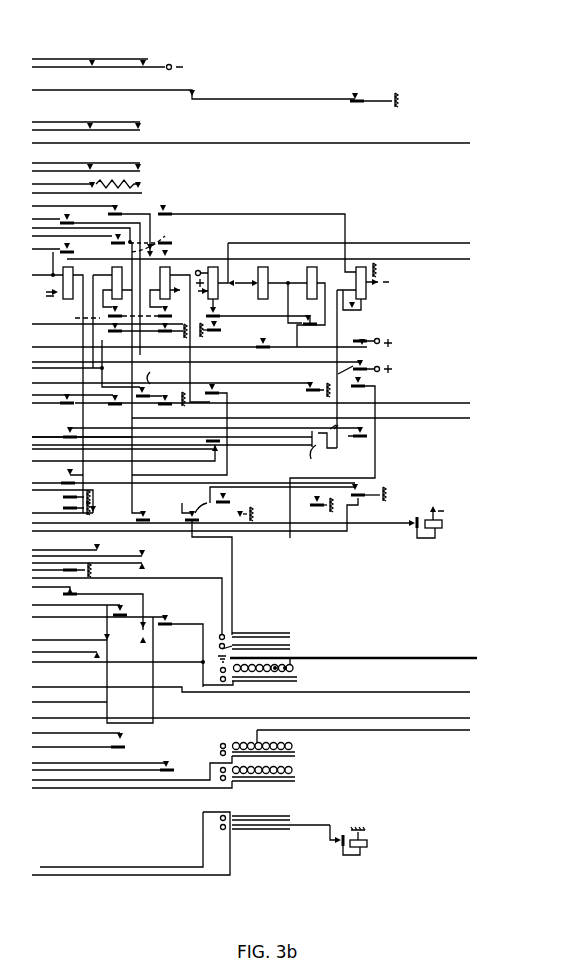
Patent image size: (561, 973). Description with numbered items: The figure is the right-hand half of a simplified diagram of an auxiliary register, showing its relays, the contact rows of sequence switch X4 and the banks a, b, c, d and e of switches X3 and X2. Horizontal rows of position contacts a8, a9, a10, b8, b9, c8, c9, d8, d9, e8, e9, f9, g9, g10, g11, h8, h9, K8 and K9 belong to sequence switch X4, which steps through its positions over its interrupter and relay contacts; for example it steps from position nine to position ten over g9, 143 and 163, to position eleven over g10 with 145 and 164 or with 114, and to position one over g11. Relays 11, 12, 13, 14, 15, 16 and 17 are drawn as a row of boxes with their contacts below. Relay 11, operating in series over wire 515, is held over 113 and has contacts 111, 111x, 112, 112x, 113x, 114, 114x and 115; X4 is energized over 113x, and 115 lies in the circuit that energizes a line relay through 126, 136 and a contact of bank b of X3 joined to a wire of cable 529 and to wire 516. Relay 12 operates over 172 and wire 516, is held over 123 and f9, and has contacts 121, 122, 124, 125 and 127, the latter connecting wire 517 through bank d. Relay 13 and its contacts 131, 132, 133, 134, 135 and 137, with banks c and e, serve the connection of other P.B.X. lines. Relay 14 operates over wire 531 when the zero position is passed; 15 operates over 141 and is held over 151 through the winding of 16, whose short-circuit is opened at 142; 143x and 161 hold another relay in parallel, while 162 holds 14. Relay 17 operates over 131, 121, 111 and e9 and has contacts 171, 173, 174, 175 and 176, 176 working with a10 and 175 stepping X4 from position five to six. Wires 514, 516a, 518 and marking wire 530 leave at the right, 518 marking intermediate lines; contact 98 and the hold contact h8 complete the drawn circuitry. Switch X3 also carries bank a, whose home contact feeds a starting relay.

The contact a8 of sequence switch X4 a8 is at (90, 55).
The contact a9 of sequence switch X4 a9 is at (107, 57).
The contact a10 of sequence switch X4 a10 is at (193, 87).
The contact b8 of sequence switch X4 b8 is at (86, 115).
The contact b9 of sequence switch X4 b9 is at (86, 115).
The contact c8 of sequence switch X4 c8 is at (86, 159).
The contact c9 of sequence switch X4 c9 is at (86, 159).
The contact d8 of sequence switch X4 d8 is at (63, 184).
The contact d9 of sequence switch X4 d9 is at (98, 185).
The contact e8 of sequence switch X4 e8 is at (78, 242).
The contact e9 of sequence switch X4 e9 is at (99, 229).
The contact f9 of sequence switch X4 f9 is at (132, 368).
The contact g9 of sequence switch X4 g9 is at (143, 497).
The contact g10 of sequence switch X4 g10 is at (201, 566).
The contact g11 of sequence switch X4 g11 is at (257, 514).
The contact h8 of sequence switch X4 h8 is at (75, 548).
The contact h9 of sequence switch X4 h9 is at (97, 558).
The contact k8 of sequence switch X4 K8 is at (71, 631).
The contact k9 of sequence switch X4 K9 is at (89, 647).
The relay 11 is at (67, 283).
The relay 12 is at (121, 358).
The relay 13 is at (180, 332).
The relay 14 is at (227, 288).
The relay 15 is at (282, 280).
The relay 16 is at (306, 304).
The relay 17 is at (362, 355).
The contact 98 is at (222, 514).
The contact 111 of relay 11 111 is at (86, 277).
The contact 111x of relay 11 111x is at (53, 252).
The contact 112 of relay 11 112 is at (65, 395).
The contact 112x of relay 11 112x is at (82, 422).
The contact 113 of relay 11 113 is at (195, 479).
The contact 113x of relay 11 113x is at (74, 497).
The contact 114 of relay 11 114 is at (75, 505).
The contact 114x of relay 11 114x is at (128, 600).
The contact 115 of relay 11 115 is at (89, 608).
The contact 121 of relay 12 121 is at (124, 226).
The contact 122 of relay 12 122 is at (163, 238).
The contact 123 of relay 12 123 is at (108, 314).
The contact 124 of relay 12 124 is at (107, 335).
The contact 125 of relay 12 125 is at (77, 396).
The contact 126 of relay 12 126 is at (92, 660).
The contact 127 of relay 12 127 is at (90, 739).
The contact 131 of relay 13 131 is at (257, 235).
The contact 132 of relay 13 132 is at (171, 251).
The contact 133 of relay 13 133 is at (176, 308).
The contact 134 of relay 13 134 is at (149, 335).
The contact 135 of relay 13 135 is at (174, 394).
The contact 136 of relay 13 136 is at (118, 645).
The contact 137 of relay 13 137 is at (112, 763).
The contact 141 of relay 14 141 is at (220, 334).
The contact 142 of relay 14 142 is at (258, 311).
The contact 143 of relay 14 143 is at (190, 429).
The contact 143x of relay 14 143x is at (126, 442).
The contact 145 of relay 14 145 is at (269, 498).
The contact 151 of relay 15 151 is at (199, 338).
The contact 161 of relay 16 161 is at (185, 444).
The contact 162 of relay 16 162 is at (310, 312).
The contact 163 of relay 16 163 is at (181, 391).
The contact 164 of relay 16 164 is at (317, 508).
The contact 171 of relay 17 171 is at (367, 337).
The contact 172 of relay 17 172 is at (212, 368).
The contact 173 of relay 17 173 is at (332, 457).
The contact 174 of relay 17 174 is at (218, 439).
The contact 175 of relay 17 175 is at (368, 503).
The contact 176 of relay 17 176 is at (369, 108).
The wire 514 is at (376, 734).
The wire 515 is at (281, 258).
The wire 516 is at (313, 418).
The wire 516a is at (267, 403).
The wire 517 is at (263, 718).
The wire 518 is at (263, 692).
The wire cable 529 is at (365, 659).
The marking wire 530 is at (263, 144).
The wire 531 is at (356, 261).
The sequence switch X3 is at (361, 840).
The sequence switch X4 is at (437, 522).
The bank a of X3 a is at (265, 647).
The bank b of X3 b is at (257, 675).
The bank c of X2 c is at (266, 747).
The bank d of X3 d is at (267, 774).
The bank e of X2 e is at (181, 837).